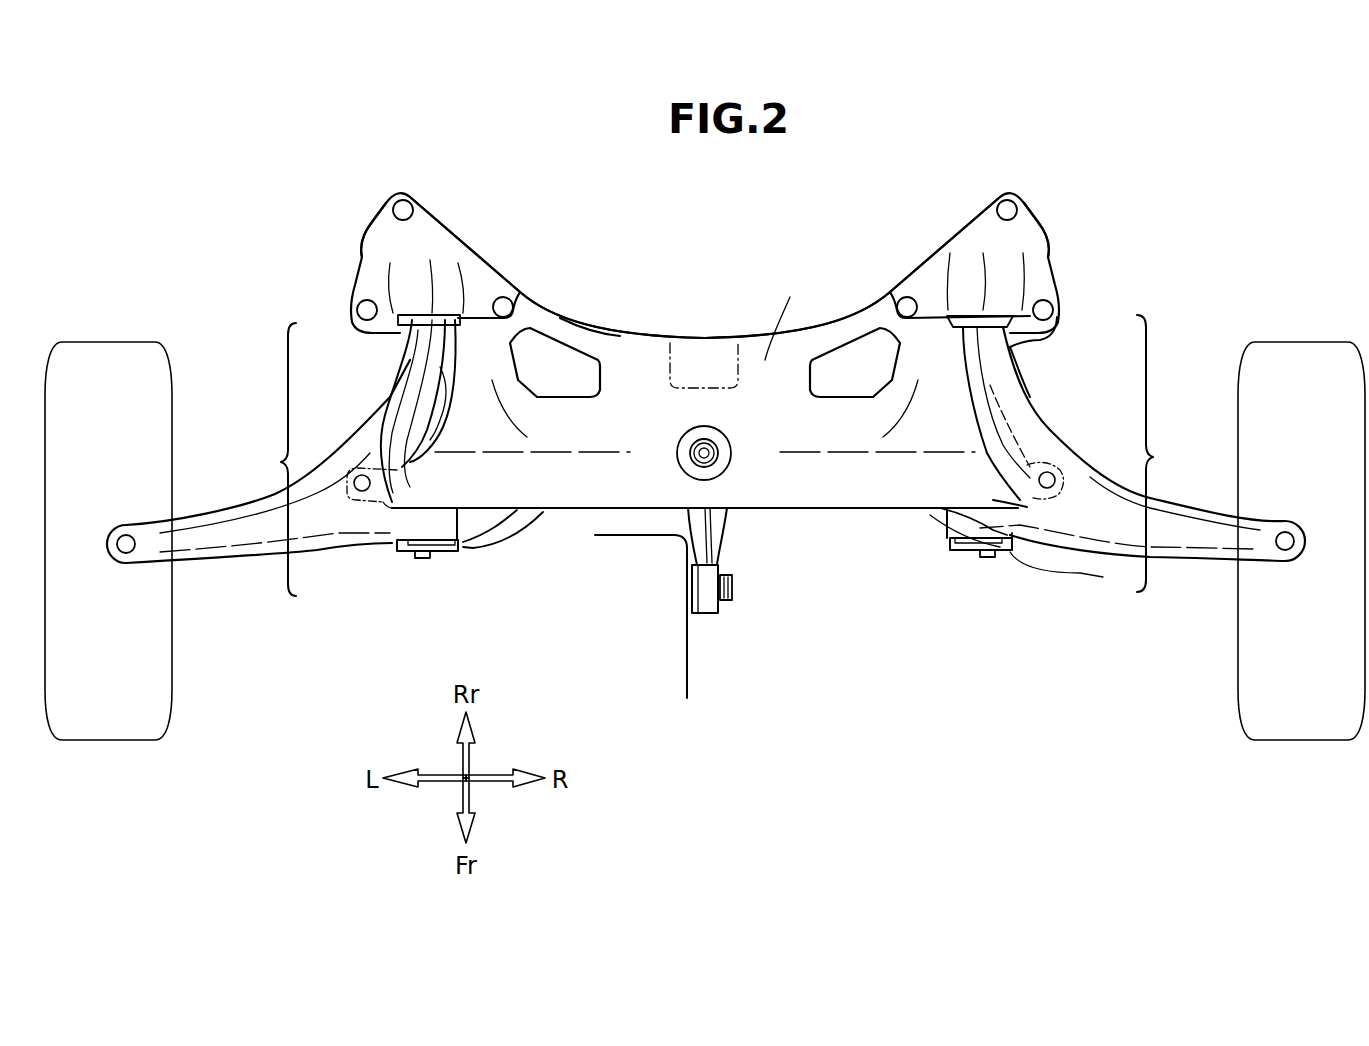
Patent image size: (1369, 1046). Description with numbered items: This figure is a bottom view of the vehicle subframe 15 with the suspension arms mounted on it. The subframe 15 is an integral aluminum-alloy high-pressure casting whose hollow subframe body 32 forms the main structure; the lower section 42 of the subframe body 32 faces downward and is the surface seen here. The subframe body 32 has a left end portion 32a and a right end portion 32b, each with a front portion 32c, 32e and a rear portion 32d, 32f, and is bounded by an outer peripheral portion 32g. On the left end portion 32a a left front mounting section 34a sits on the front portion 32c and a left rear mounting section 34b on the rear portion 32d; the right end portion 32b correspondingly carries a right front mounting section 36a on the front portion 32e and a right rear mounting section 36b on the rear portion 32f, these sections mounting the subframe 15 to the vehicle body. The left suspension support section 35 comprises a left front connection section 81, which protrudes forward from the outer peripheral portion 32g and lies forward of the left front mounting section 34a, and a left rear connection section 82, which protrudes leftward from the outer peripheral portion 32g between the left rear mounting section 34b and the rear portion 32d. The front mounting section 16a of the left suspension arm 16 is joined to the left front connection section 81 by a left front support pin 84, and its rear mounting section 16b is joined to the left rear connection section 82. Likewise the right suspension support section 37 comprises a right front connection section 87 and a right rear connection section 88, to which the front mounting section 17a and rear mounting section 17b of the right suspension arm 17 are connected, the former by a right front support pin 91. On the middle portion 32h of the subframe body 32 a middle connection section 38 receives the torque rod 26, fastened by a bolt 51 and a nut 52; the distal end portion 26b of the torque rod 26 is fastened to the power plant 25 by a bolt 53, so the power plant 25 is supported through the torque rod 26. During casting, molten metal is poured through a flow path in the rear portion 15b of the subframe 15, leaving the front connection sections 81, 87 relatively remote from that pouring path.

The subframe 15 is at (337, 114).
The rear portion of the subframe 15b is at (530, 314).
The left suspension arm 16 is at (217, 562).
The front mounting section of the left suspension arm 16a is at (425, 532).
The rear mounting section of the left suspension arm 16b is at (458, 300).
The right suspension arm 17 is at (1182, 560).
The front mounting section of the right suspension arm 17a is at (973, 532).
The rear mounting section of the right suspension arm 17b is at (985, 277).
The power plant 25 is at (680, 667).
The torque rod 26 is at (723, 536).
The distal end portion of the torque rod 26b is at (698, 590).
The subframe body 32 is at (648, 337).
The left end portion of the subframe body 32a is at (460, 410).
The right end portion of the subframe body 32b is at (953, 413).
The front portion of the left end portion 32c is at (458, 532).
The rear portion of the left end portion 32d is at (467, 327).
The front portion of the right end portion 32e is at (968, 498).
The rear portion of the right end portion 32f is at (932, 313).
The outer peripheral portion of the subframe body 32g is at (573, 334).
The middle portion of the subframe body 32h is at (700, 400).
The left front mounting section 34a is at (352, 472).
The left rear mounting section 34b is at (360, 293).
The left suspension support section 35 is at (348, 458).
The right front mounting section 36a is at (1054, 472).
The right rear mounting section 36b is at (1050, 280).
The right suspension support section 37 is at (1076, 453).
The middle connection section 38 is at (732, 455).
The lower section 42 is at (790, 297).
The bolt 51 is at (716, 441).
The nut 52 is at (692, 441).
The bolt 53 is at (733, 588).
The left front connection section 81 is at (400, 553).
The left rear connection section 82 is at (407, 343).
The left front support pin 84 is at (418, 557).
The right front connection section 87 is at (1073, 577).
The right rear connection section 88 is at (977, 363).
The right front support pin 91 is at (985, 558).